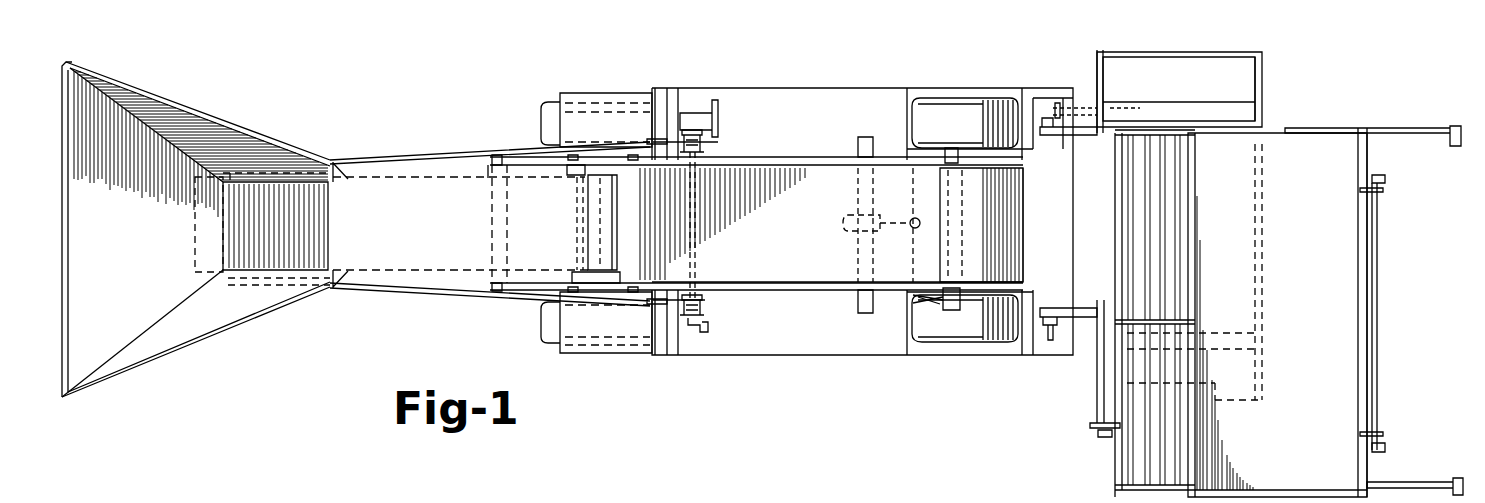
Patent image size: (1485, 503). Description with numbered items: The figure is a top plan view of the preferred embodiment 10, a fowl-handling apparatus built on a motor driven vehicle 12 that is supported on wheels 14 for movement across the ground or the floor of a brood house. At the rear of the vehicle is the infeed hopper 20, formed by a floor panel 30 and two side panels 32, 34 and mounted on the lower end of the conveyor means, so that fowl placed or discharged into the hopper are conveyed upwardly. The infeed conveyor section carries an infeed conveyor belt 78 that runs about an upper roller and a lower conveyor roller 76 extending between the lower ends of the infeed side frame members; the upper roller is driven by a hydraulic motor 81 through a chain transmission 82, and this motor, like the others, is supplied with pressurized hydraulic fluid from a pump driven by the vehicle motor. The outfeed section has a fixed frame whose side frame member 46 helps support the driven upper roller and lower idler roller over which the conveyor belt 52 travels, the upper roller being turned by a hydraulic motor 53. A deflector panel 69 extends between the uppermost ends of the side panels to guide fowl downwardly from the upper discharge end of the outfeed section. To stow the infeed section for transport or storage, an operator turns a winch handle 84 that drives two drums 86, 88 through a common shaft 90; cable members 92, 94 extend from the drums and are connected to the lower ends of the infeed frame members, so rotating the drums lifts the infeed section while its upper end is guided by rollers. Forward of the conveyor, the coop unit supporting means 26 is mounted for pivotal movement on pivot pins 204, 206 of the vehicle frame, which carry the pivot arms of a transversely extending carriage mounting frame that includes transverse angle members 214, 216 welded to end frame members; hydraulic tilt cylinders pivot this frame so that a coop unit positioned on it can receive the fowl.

The preferred embodiment 10 is at (458, 85).
The motor driven vehicle 12 is at (527, 317).
The wheels 14 is at (545, 121).
The infeed hopper 20 is at (196, 218).
The coop unit supporting means 26 is at (1254, 291).
The floor panel 30 is at (63, 63).
The side panel 32 is at (257, 149).
The side panel 34 is at (195, 333).
The side frame member 46 is at (810, 282).
The conveyor belt 52 is at (780, 225).
The hydraulic motor 53 is at (960, 297).
The deflector panel 69 is at (1018, 200).
The lower conveyor roller 76 is at (200, 257).
The infeed conveyor belt 78 is at (275, 226).
The hydraulic motor 81 is at (1153, 223).
The chain transmission 82 is at (1128, 378).
The winch handle 84 is at (710, 327).
The drum 86 is at (704, 144).
The drum 88 is at (704, 308).
The common shaft 90 is at (693, 239).
The cable member 92 is at (448, 152).
The cable member 94 is at (393, 290).
The pivot pin 204 is at (1045, 136).
The pivot pin 206 is at (1050, 307).
The transverse angle member 214 is at (1095, 75).
The transverse angle member 216 is at (1262, 67).